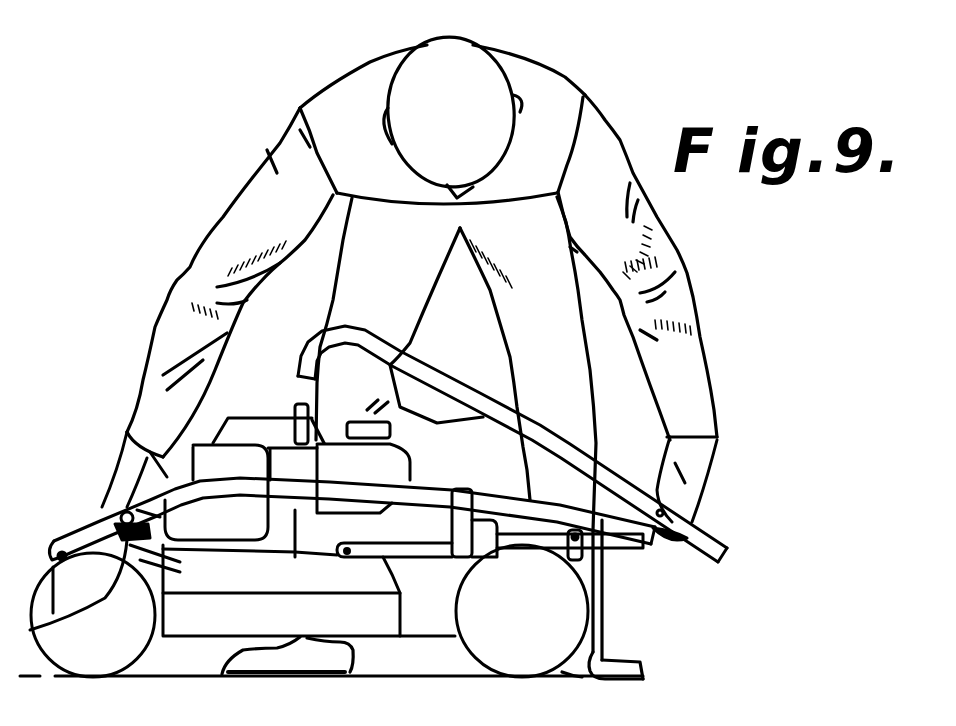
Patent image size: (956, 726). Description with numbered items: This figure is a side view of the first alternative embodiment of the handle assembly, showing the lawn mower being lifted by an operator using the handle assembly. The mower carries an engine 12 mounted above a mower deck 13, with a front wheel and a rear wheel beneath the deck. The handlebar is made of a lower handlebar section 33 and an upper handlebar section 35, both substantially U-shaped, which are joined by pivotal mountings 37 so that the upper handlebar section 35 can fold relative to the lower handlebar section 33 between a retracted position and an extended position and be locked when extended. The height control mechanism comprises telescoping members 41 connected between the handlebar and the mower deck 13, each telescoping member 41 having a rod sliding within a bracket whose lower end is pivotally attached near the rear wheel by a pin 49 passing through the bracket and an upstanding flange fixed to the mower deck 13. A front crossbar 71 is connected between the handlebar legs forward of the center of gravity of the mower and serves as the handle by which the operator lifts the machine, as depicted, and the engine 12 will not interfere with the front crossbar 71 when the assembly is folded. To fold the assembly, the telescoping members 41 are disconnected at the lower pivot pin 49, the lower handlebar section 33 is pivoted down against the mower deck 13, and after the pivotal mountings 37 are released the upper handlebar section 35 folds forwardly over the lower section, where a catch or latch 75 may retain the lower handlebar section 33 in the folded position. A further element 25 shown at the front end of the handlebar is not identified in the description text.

The engine 12 is at (275, 415).
The mower deck 13 is at (192, 637).
The front end of handle bar 25 is at (47, 532).
The lower handlebar section 33 is at (430, 488).
The upper handlebar section 35 is at (452, 372).
The pivotal mountings 37 is at (665, 508).
The telescoping members 41 is at (411, 556).
The pin 49 is at (595, 542).
The front crossbar 71 is at (122, 498).
The catch or latch 75 is at (493, 558).